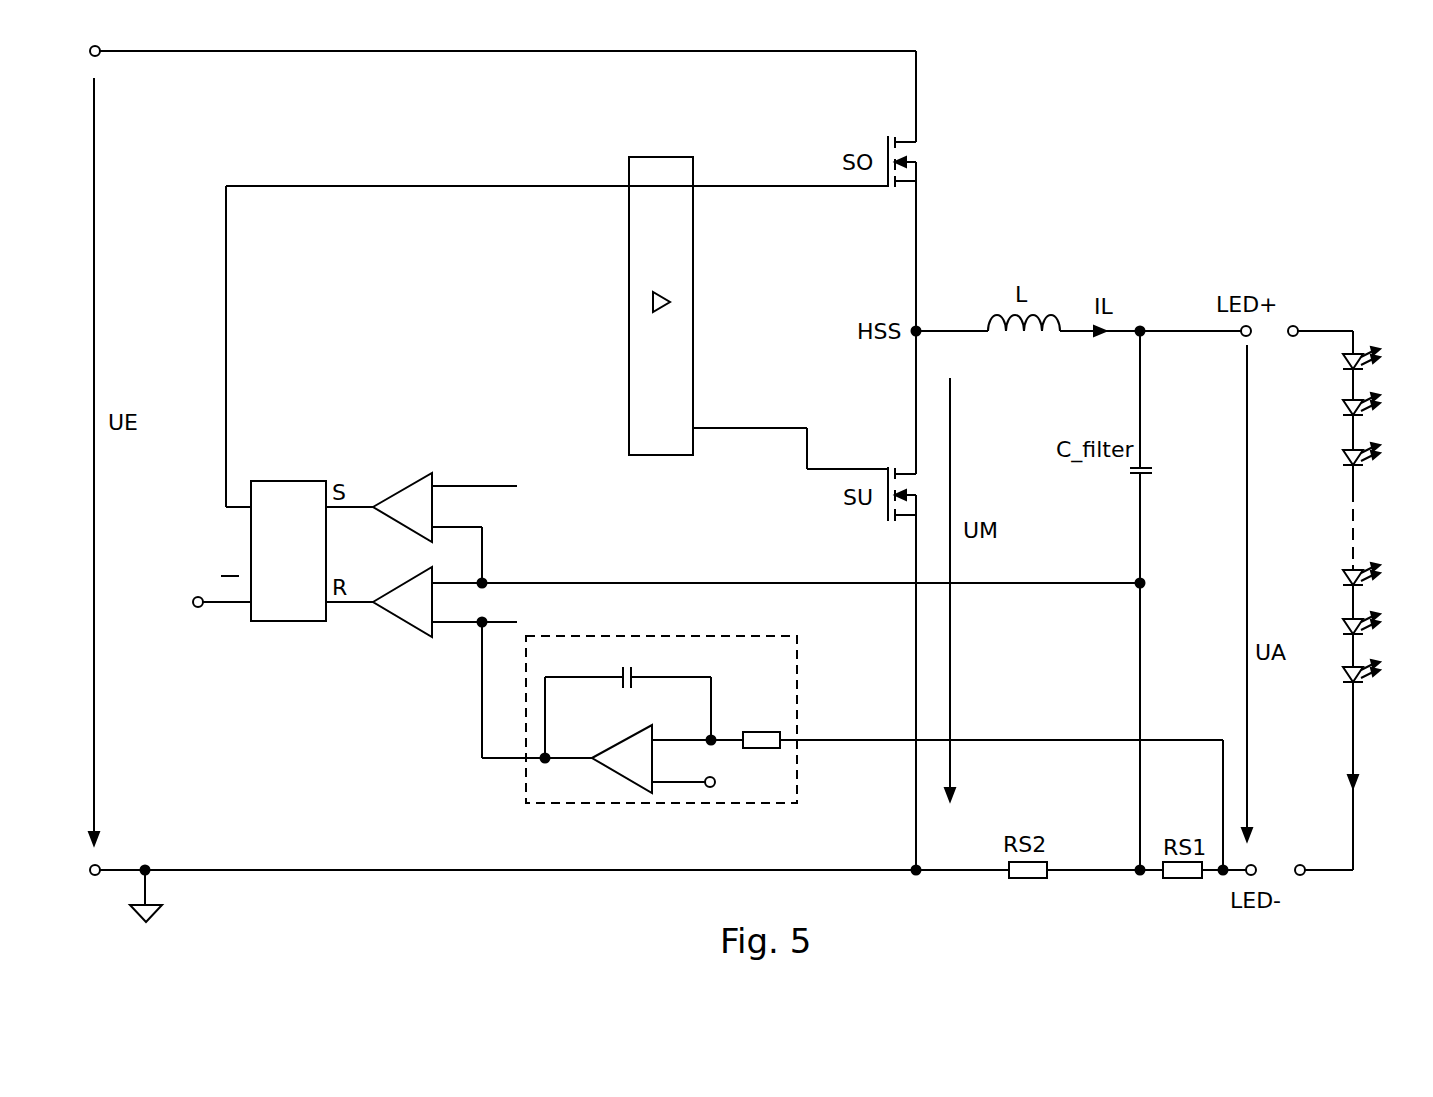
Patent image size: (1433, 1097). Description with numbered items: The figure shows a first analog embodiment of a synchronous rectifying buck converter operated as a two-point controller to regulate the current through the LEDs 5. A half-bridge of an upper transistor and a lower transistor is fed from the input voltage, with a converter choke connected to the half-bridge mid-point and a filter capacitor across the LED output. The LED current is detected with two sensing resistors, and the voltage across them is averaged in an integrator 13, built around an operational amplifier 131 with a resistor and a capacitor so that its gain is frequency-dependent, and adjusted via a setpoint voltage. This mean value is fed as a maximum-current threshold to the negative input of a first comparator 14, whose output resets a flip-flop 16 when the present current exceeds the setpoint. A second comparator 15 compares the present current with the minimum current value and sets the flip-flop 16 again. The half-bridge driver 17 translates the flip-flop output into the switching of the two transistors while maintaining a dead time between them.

The LEDs 5 is at (1362, 316).
The integrator 13 is at (696, 719).
The first comparator 14 is at (402, 622).
The second comparator 15 is at (402, 527).
The flip-flop 16 is at (290, 621).
The half-bridge driver 17 is at (693, 328).
The operational amplifier 131 is at (620, 740).